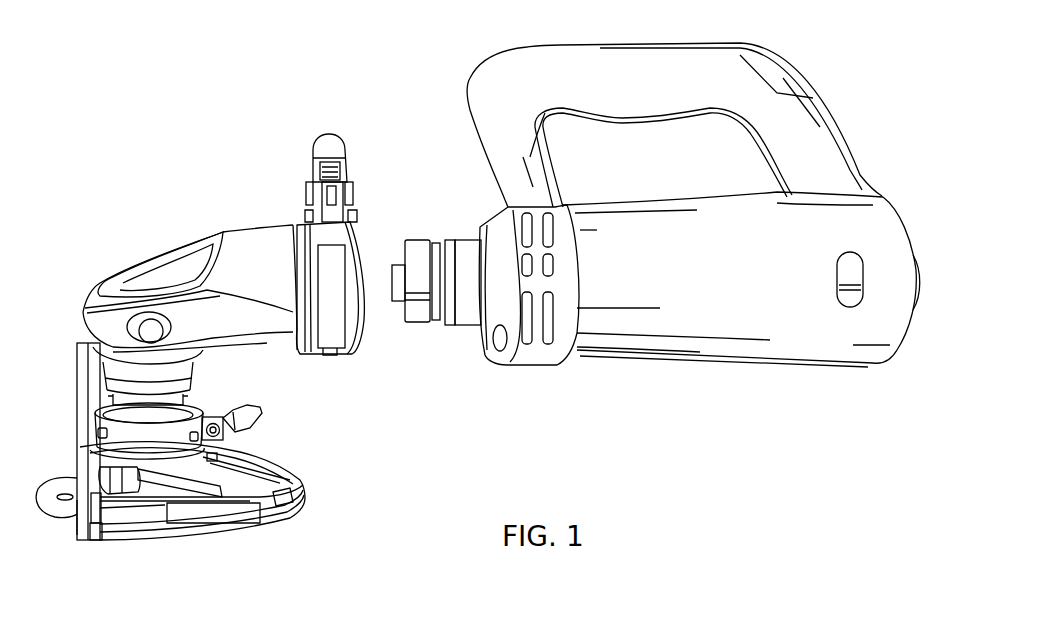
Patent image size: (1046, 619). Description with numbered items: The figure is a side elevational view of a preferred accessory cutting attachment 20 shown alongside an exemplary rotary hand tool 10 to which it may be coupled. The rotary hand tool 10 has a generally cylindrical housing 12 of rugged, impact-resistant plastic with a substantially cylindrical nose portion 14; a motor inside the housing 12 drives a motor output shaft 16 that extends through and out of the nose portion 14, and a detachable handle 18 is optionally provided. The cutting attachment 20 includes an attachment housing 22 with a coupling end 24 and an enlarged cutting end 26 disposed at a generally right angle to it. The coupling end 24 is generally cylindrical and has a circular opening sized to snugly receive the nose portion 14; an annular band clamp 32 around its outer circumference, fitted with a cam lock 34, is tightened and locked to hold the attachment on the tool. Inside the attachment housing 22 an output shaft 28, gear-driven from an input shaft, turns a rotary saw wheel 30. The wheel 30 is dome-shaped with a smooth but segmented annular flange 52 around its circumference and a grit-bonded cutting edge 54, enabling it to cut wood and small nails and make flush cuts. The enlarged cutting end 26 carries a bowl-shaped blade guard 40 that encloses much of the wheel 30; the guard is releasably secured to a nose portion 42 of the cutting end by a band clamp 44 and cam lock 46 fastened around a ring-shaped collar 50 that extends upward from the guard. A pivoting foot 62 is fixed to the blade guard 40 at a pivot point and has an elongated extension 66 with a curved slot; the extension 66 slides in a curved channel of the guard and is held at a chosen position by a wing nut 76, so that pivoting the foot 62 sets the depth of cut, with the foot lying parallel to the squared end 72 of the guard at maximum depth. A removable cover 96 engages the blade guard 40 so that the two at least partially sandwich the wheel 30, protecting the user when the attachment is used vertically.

The rotary hand tool 10 is at (810, 52).
The housing 12 is at (736, 364).
The nose portion 14 is at (470, 240).
The motor output shaft 16 is at (438, 322).
The detachable handle 18 is at (580, 44).
The accessory cutting attachment 20 is at (98, 213).
The attachment housing 22 is at (161, 253).
The coupling end 24 is at (365, 256).
The enlarged cutting end 26 is at (224, 395).
The output shaft 28 is at (95, 420).
The rotary saw wheel 30 is at (42, 508).
The annular band clamp 32 is at (339, 332).
The cam lock 34 is at (330, 140).
The blade guard 40 is at (273, 512).
The nose portion 42 is at (172, 370).
The band clamp 44 is at (90, 452).
The cam lock 46 is at (258, 416).
The collar 50 is at (200, 410).
The annular flange 52 is at (73, 506).
The cutting edge 54 is at (48, 495).
The pivoting foot 62 is at (96, 521).
The elongated extension 66 is at (216, 498).
The squared end 72 is at (108, 517).
The wing nut 76 is at (131, 482).
The removable cover 96 is at (230, 542).